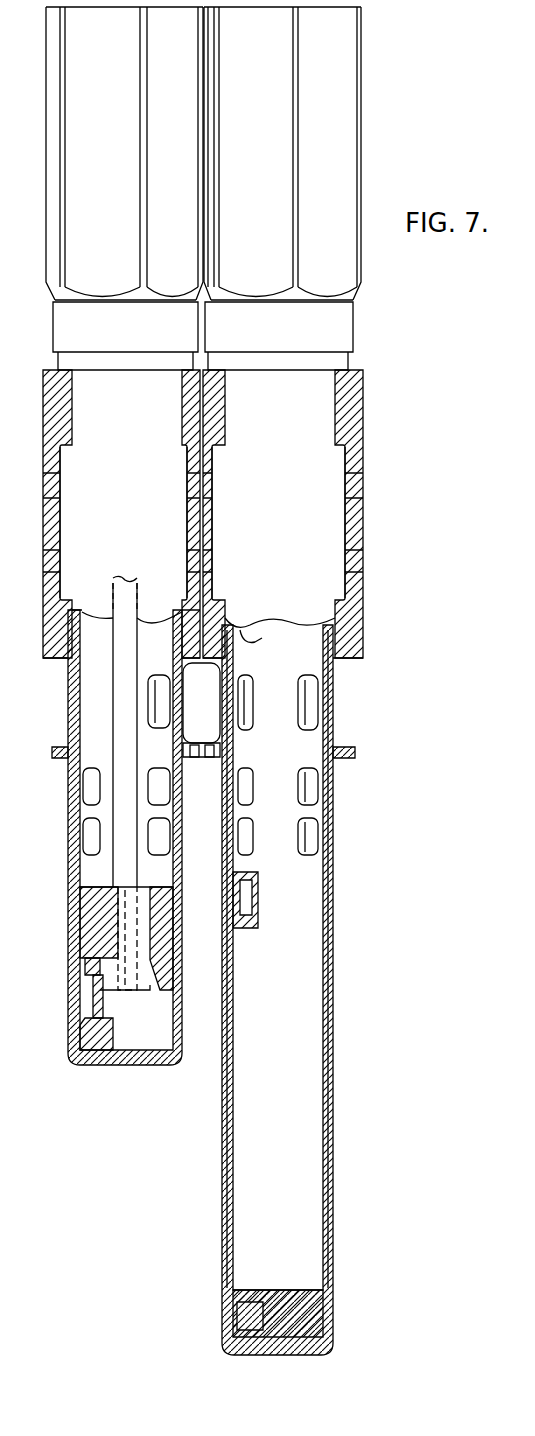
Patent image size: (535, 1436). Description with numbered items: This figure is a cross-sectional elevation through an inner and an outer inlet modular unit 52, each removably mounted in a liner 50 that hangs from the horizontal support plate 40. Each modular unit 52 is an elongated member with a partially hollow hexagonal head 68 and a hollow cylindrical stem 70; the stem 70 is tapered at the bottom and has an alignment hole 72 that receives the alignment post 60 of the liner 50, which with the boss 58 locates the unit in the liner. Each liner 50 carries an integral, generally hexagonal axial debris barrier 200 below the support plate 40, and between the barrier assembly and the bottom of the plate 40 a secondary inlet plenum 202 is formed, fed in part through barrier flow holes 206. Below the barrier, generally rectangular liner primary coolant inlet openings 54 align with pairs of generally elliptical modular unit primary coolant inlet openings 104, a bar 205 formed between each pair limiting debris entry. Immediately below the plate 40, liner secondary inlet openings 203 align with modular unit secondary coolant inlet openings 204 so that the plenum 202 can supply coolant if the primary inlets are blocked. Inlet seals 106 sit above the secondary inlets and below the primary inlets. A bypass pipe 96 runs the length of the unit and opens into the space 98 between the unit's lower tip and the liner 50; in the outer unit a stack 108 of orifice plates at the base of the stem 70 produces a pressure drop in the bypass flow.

The hexagonal head 68 is at (361, 92).
The horizontal support plate 40 is at (363, 403).
The inlet seals 106 is at (337, 638).
The bypass pipe 96 is at (258, 905).
The liner secondary inlet openings 203 is at (302, 676).
The secondary inlet plenum 202 is at (216, 711).
The modular unit secondary coolant inlet openings 204 is at (298, 712).
The barrier flow holes 206 is at (200, 760).
The modular unit primary coolant inlet openings 104 is at (298, 788).
The axial debris barrier 200 is at (340, 775).
The liner primary coolant inlet openings 54 is at (300, 812).
The bar 205 is at (320, 822).
The inlet modular unit 52 is at (88, 908).
The stacks of orifice plates 108 is at (182, 925).
The alignment hole 72 is at (92, 963).
The alignment post 60 is at (98, 1005).
The boss 58 is at (92, 1035).
The space 98 is at (158, 1030).
The hollow cylindrical stem 70 is at (325, 1022).
The liner 50 is at (333, 1092).